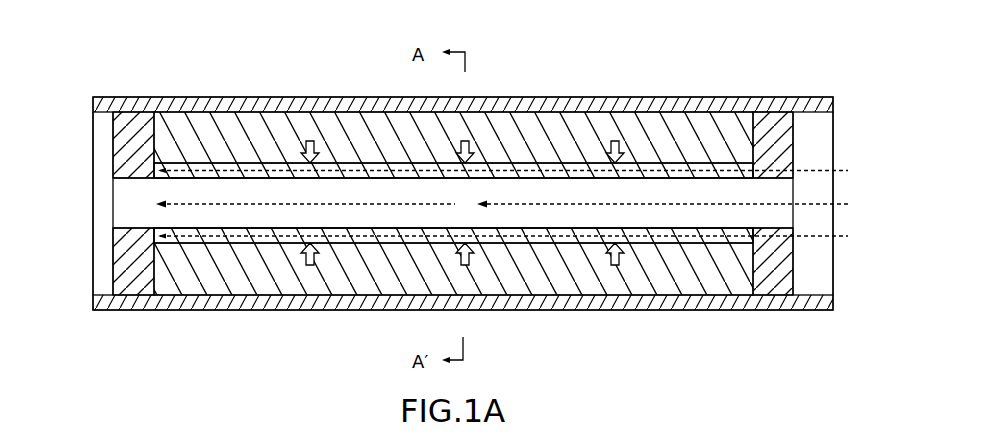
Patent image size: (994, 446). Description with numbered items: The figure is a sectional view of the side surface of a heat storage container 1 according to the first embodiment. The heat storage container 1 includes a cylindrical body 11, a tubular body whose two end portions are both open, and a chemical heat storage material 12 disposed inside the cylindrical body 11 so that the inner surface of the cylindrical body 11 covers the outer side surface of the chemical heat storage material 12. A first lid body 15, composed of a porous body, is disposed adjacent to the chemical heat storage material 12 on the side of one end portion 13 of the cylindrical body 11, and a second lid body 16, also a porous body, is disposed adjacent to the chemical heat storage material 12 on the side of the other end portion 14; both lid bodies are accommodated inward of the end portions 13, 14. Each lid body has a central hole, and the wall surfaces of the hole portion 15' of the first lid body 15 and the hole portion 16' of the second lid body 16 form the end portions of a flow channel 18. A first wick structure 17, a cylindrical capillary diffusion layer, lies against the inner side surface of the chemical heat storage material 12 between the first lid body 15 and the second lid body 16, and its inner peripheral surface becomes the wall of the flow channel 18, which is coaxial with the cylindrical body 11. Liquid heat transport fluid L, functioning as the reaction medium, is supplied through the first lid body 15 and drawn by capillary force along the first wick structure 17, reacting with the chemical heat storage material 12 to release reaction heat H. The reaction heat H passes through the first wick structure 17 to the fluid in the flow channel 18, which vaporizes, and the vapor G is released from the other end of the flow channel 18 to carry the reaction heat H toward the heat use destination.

The heat storage container 1 is at (534, 90).
The cylindrical body 11 is at (715, 97).
The chemical heat storage material 12 is at (578, 140).
The one end portion 13 is at (833, 136).
The other end portion 14 is at (93, 135).
The first lid body 15 is at (781, 209).
The hole portion of the first lid body 15' is at (841, 203).
The second lid body 16 is at (133, 207).
The hole portion of the second lid body 16' is at (80, 203).
The first wick structure 17 is at (234, 163).
The flow channel 18 is at (758, 198).
The vapor of heat transport fluid G is at (307, 204).
The liquid heat transport fluid L is at (657, 163).
The reaction heat H is at (312, 140).